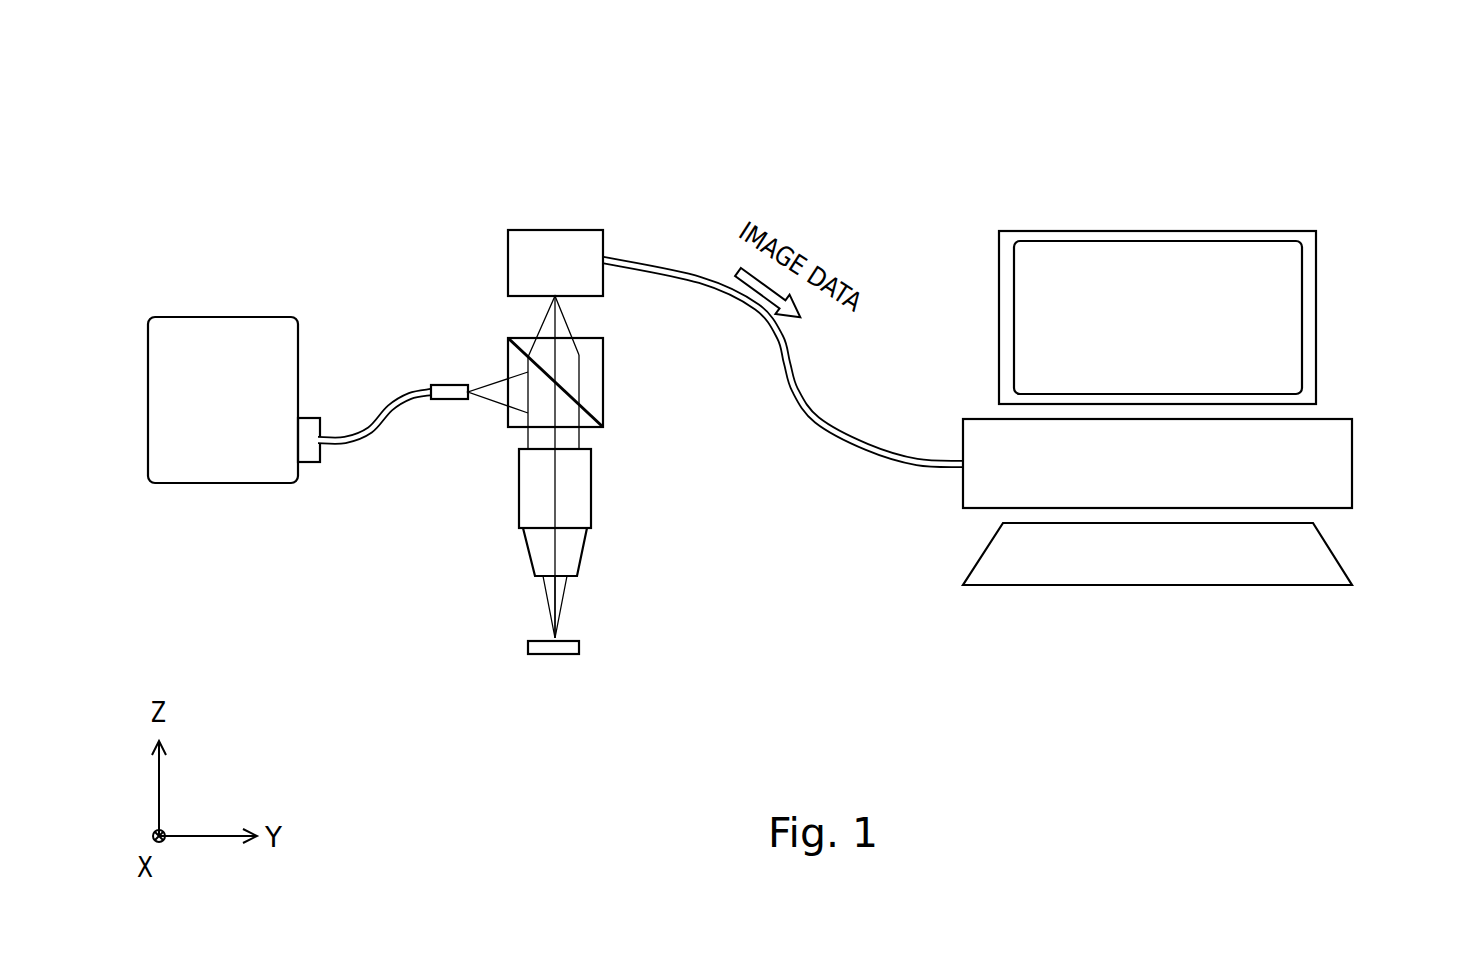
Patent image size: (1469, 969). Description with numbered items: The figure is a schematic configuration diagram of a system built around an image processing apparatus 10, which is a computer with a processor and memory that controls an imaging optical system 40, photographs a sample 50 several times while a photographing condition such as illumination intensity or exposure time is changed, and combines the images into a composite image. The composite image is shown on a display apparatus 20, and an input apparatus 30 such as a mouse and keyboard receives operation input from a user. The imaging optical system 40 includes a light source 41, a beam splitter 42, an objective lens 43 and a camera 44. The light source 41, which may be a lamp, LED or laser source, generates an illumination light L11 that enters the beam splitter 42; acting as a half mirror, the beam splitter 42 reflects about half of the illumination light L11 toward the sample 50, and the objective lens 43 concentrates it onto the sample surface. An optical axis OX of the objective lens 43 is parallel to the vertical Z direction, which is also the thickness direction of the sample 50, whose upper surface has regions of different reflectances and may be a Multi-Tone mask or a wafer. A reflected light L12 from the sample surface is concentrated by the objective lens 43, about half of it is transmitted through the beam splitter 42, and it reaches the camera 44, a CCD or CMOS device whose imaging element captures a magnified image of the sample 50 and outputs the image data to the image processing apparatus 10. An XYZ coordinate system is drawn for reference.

The image processing apparatus 10 is at (1353, 437).
The display apparatus 20 is at (1318, 258).
The input apparatus 30 is at (1340, 555).
The imaging optical system 40 is at (370, 128).
The light source 41 is at (171, 316).
The beam splitter 42 is at (603, 365).
The objective lens 43 is at (518, 479).
The camera 44 is at (508, 258).
The sample 50 is at (583, 646).
The illumination light L11 is at (488, 383).
The reflected light L12 is at (563, 593).
The optical axis OX is at (549, 590).